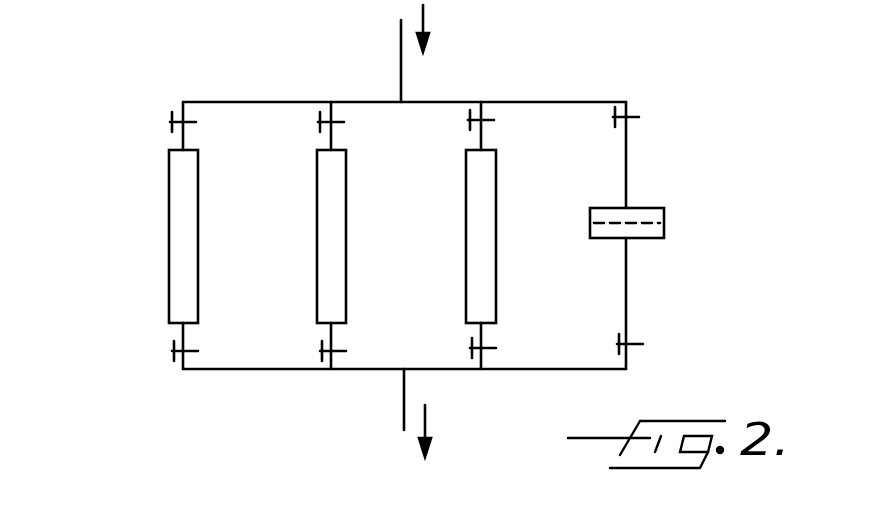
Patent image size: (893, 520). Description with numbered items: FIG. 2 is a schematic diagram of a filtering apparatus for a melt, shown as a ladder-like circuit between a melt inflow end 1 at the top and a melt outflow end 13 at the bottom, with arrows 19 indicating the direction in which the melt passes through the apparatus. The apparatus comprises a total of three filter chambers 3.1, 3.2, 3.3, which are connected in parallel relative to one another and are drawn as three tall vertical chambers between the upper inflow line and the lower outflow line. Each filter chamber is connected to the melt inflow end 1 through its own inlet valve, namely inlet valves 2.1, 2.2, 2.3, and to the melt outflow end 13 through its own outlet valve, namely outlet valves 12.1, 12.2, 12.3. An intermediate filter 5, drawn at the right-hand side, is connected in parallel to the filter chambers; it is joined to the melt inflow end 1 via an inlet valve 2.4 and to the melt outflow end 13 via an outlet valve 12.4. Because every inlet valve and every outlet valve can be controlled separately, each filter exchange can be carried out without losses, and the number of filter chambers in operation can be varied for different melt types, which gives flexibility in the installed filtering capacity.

The melt inflow end 1 is at (401, 47).
The inlet valve 2.1 is at (171, 122).
The inlet valve 2.2 is at (319, 118).
The inlet valve 2.3 is at (486, 118).
The inlet valve 2.4 is at (630, 117).
The filter chamber 3.1 is at (170, 220).
The filter chamber 3.2 is at (318, 232).
The filter chamber 3.3 is at (467, 228).
The intermediate filter 5 is at (650, 208).
The outlet valve 12.1 is at (175, 352).
The outlet valve 12.2 is at (320, 357).
The outlet valve 12.3 is at (488, 349).
The outlet valve 12.4 is at (632, 345).
The melt outflow end 13 is at (404, 418).
The current direction arrow 19 is at (423, 23).